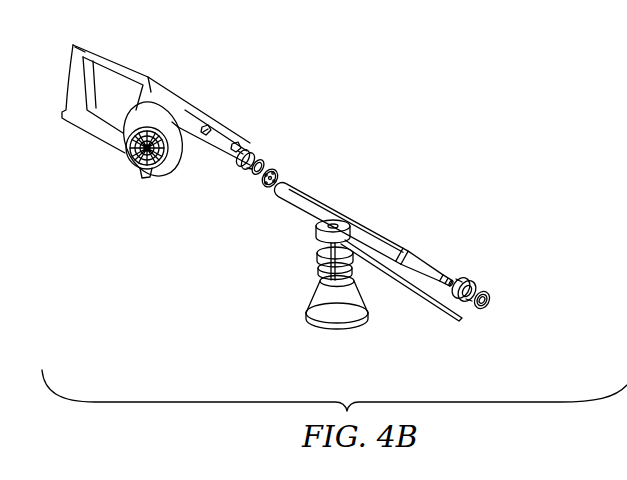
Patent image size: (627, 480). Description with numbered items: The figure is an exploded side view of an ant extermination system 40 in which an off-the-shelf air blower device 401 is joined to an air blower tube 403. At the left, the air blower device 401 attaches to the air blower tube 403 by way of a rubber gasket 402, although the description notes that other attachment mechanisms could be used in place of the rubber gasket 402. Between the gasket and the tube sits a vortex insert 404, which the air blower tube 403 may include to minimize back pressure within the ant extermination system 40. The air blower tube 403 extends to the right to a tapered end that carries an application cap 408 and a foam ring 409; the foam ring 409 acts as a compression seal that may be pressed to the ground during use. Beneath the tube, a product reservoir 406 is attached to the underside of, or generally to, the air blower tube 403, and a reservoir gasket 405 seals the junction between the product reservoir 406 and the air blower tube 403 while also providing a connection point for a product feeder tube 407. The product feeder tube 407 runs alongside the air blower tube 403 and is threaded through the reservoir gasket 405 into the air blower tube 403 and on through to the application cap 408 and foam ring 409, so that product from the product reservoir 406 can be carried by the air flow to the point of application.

The ant extermination system 40 is at (548, 131).
The air blower device 401 is at (188, 116).
The rubber gasket 402 is at (262, 163).
The air blower tube 403 is at (323, 192).
The vortex insert 404 is at (264, 186).
The reservoir gasket 405 is at (316, 258).
The product reservoir 406 is at (307, 306).
The product feeder tube 407 is at (434, 305).
The application cap 408 is at (470, 285).
The foam ring 409 is at (493, 293).